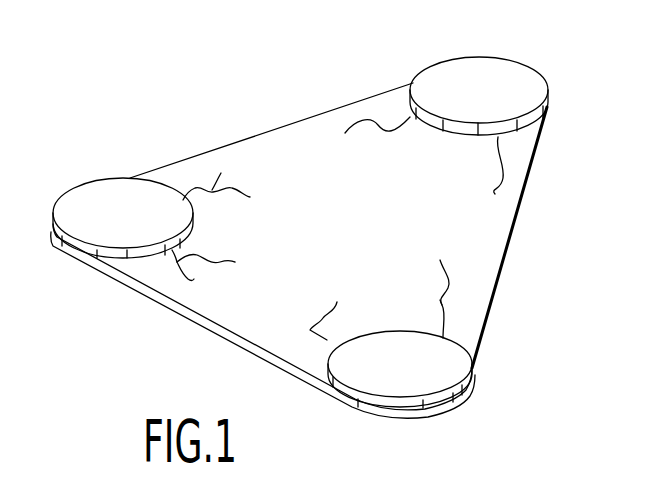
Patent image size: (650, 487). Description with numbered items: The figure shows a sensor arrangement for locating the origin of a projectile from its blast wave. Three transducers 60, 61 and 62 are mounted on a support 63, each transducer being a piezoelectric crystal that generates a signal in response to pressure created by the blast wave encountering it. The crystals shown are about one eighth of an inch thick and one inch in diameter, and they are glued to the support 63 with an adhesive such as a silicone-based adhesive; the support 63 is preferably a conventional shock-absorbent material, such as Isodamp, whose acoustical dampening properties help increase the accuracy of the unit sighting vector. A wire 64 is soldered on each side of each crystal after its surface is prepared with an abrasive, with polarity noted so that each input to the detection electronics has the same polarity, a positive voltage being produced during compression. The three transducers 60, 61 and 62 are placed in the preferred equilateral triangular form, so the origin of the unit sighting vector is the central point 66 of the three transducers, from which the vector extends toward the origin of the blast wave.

The transducer 60 is at (496, 108).
The transducer 61 is at (131, 230).
The transducer 62 is at (412, 381).
The support 63 is at (280, 122).
The wire 64 is at (337, 228).
The central point 66 is at (342, 231).